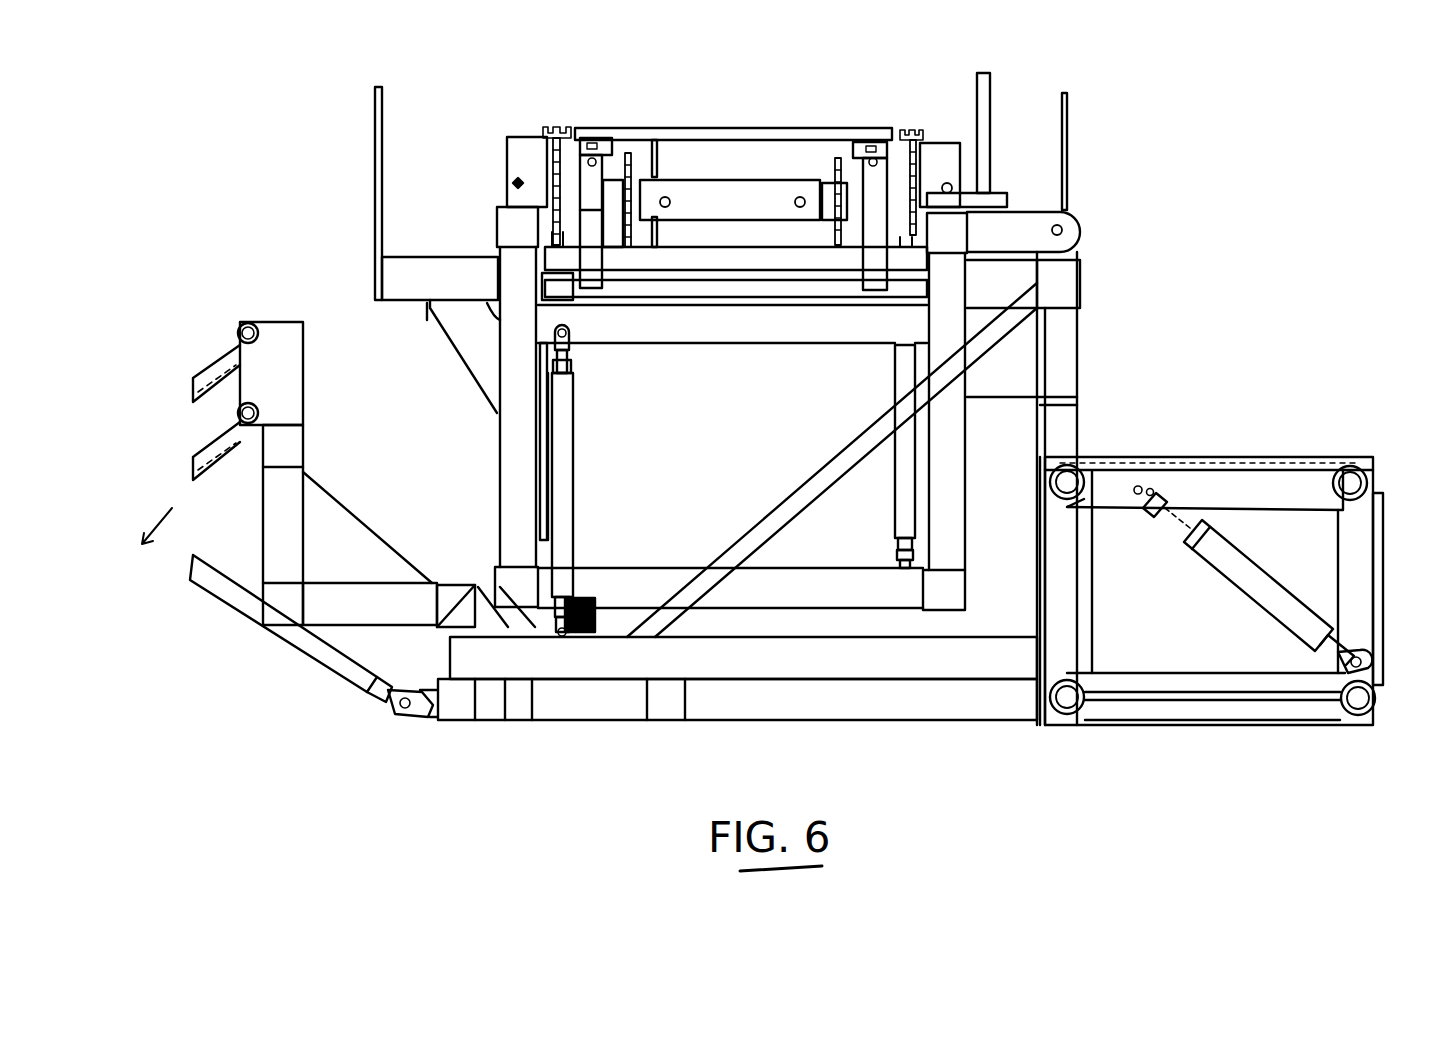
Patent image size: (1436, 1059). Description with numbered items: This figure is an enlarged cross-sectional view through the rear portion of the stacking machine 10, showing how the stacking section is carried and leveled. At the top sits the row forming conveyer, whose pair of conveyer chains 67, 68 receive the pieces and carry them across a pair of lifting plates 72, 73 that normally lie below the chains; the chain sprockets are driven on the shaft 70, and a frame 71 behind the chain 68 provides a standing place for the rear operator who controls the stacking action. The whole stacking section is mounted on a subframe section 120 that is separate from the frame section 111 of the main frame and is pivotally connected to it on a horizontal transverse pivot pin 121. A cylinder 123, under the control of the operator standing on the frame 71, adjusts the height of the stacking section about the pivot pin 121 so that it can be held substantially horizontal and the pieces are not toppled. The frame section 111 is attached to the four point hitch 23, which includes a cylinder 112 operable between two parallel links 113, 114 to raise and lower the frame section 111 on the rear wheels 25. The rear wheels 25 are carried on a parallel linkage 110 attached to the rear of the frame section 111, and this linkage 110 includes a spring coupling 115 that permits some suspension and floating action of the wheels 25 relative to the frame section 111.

The apparatus 10 is at (146, 547).
The four point hitch 23 is at (1259, 441).
The rear wheels 25 is at (277, 546).
The conveyer chain 67 is at (912, 130).
The conveyer chain 68 is at (558, 127).
The shaft 70 is at (615, 180).
The frame 71 is at (441, 171).
The lifting plate 72 is at (606, 147).
The lifting plate 73 is at (863, 142).
The parallel linkage 110 is at (205, 358).
The frame section 111 is at (553, 660).
The cylinder 112 is at (1208, 548).
The parallel link 113 is at (1112, 480).
The parallel link 114 is at (1132, 716).
The spring coupling 115 is at (300, 645).
The subframe section 120 is at (522, 428).
The pivot pin 121 is at (1062, 228).
The cylinder 123 is at (573, 395).